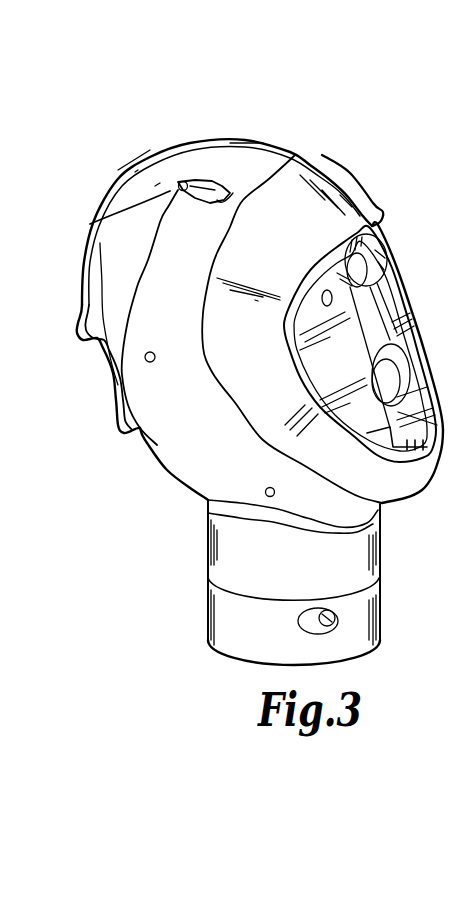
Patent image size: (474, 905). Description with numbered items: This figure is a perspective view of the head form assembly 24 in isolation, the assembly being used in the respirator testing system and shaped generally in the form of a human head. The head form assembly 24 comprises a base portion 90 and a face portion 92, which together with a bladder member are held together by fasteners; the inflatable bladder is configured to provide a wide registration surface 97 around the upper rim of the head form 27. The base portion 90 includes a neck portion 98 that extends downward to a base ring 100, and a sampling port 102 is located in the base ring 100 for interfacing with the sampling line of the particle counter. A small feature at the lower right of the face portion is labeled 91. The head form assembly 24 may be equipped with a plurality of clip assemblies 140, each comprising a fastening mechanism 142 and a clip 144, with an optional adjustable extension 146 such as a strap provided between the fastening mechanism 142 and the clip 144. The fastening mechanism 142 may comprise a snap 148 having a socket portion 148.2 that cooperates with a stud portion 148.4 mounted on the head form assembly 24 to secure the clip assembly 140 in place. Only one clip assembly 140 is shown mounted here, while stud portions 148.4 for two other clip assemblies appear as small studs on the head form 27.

The head form assembly 24 is at (100, 200).
The head form 27 is at (150, 166).
The base portion 90 is at (262, 143).
The base portion 91 is at (432, 482).
The face portion 92 is at (398, 274).
The registration surface 97 is at (357, 180).
The neck portion 98 is at (382, 552).
The base ring 100 is at (382, 600).
The sampling port 102 is at (338, 620).
The clip assembly 140 is at (204, 172).
The fastening mechanism 142 is at (164, 186).
The clip 144 is at (233, 193).
The adjustable extension 146 is at (266, 148).
The snap 148 is at (90, 369).
The socket portion 148.2 is at (114, 393).
The stud portion 148.4 is at (151, 362).